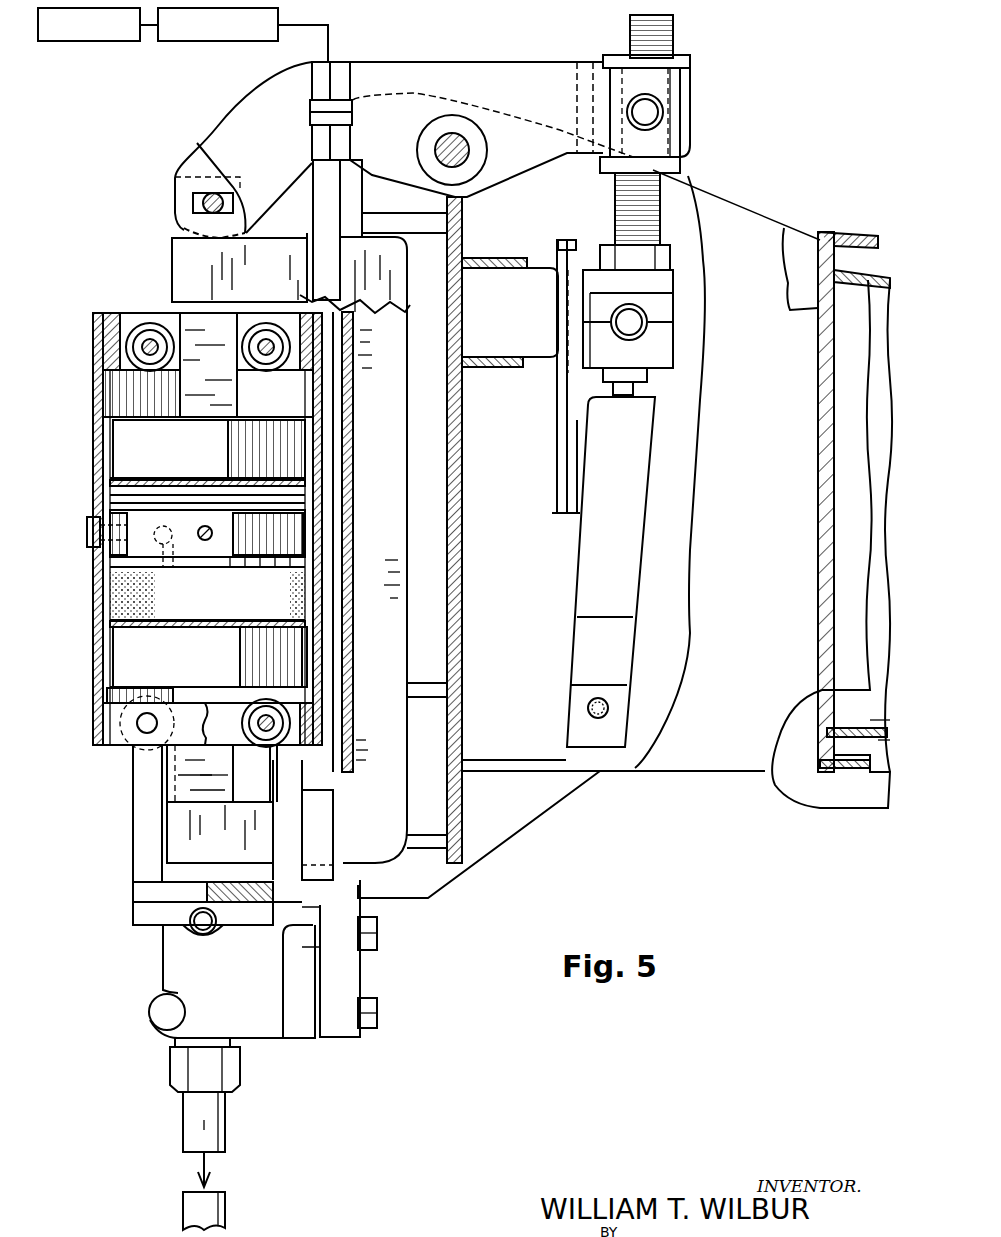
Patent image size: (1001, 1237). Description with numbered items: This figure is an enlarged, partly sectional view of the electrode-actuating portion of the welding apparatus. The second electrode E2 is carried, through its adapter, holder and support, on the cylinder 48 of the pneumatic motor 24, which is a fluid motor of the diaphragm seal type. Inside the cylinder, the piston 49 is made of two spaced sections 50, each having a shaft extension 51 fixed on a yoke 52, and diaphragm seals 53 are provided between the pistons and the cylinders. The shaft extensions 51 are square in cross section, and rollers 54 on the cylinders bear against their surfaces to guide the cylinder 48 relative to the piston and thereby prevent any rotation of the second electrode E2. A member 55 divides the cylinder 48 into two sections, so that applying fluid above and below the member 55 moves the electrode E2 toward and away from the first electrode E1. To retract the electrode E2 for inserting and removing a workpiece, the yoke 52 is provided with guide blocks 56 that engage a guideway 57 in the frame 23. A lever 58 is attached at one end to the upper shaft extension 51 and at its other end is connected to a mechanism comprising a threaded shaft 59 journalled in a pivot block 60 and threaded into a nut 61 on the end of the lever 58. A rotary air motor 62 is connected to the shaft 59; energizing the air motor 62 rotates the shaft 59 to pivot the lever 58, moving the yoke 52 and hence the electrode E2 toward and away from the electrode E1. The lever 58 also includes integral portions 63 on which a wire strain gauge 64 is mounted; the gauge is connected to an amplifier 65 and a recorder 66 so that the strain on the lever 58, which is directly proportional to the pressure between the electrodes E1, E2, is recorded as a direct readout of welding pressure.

The frame 23 is at (753, 221).
The pneumatic motor 24 is at (85, 644).
The cylinder 48 is at (93, 697).
The piston 49 is at (127, 425).
The spaced sections 50 is at (258, 423).
The shaft extensions 51 is at (227, 382).
The yoke 52 is at (388, 492).
The diaphragm seals 53 is at (97, 566).
The rollers 54 is at (150, 320).
The member 55 is at (320, 530).
The guide blocks 56 is at (327, 258).
The guideway 57 is at (341, 198).
The lever 58 is at (457, 75).
The threaded shaft 59 is at (620, 203).
The pivot block 60 is at (672, 288).
The nut 61 is at (692, 66).
The rotary air motor 62 is at (633, 478).
The integral portions 63 is at (340, 66).
The wire strain gauge 64 is at (328, 100).
The amplifier 65 is at (212, 41).
The recorder 66 is at (82, 41).
The first electrode E1 is at (226, 1205).
The second electrode E2 is at (226, 1122).